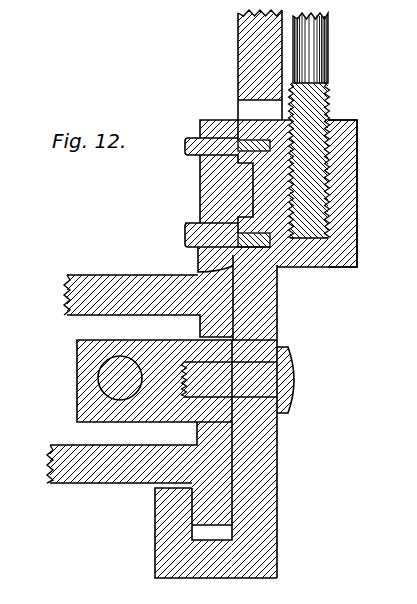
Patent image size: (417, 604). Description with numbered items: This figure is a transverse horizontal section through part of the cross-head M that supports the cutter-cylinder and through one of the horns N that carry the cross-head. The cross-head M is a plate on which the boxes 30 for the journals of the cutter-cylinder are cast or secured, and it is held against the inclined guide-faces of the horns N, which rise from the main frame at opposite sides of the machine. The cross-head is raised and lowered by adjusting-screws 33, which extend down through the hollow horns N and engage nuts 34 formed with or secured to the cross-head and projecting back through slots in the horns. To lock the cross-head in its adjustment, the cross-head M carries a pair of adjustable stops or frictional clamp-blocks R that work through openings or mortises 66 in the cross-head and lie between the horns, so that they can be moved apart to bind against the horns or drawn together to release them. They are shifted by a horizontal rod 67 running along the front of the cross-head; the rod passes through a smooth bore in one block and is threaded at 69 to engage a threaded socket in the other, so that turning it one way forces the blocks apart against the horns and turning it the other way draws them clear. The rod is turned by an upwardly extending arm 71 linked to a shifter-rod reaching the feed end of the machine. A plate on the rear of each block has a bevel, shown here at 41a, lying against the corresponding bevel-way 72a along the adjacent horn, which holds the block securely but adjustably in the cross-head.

The boxes 30 is at (262, 438).
The adjusting-screws 33 is at (98, 382).
The nuts 34 is at (77, 341).
The arm lug 41a is at (198, 261).
The openings or mortises 66 is at (239, 108).
The horizontal rod 67 is at (329, 50).
The threaded portion of the rod 69 is at (333, 121).
The upwardly-extending arm 71 is at (200, 181).
The beveled portion of the horn 72a is at (158, 275).
The frictional clamp-blocks R is at (362, 215).
The cross-head M is at (230, 526).
The standards or horns N is at (123, 452).